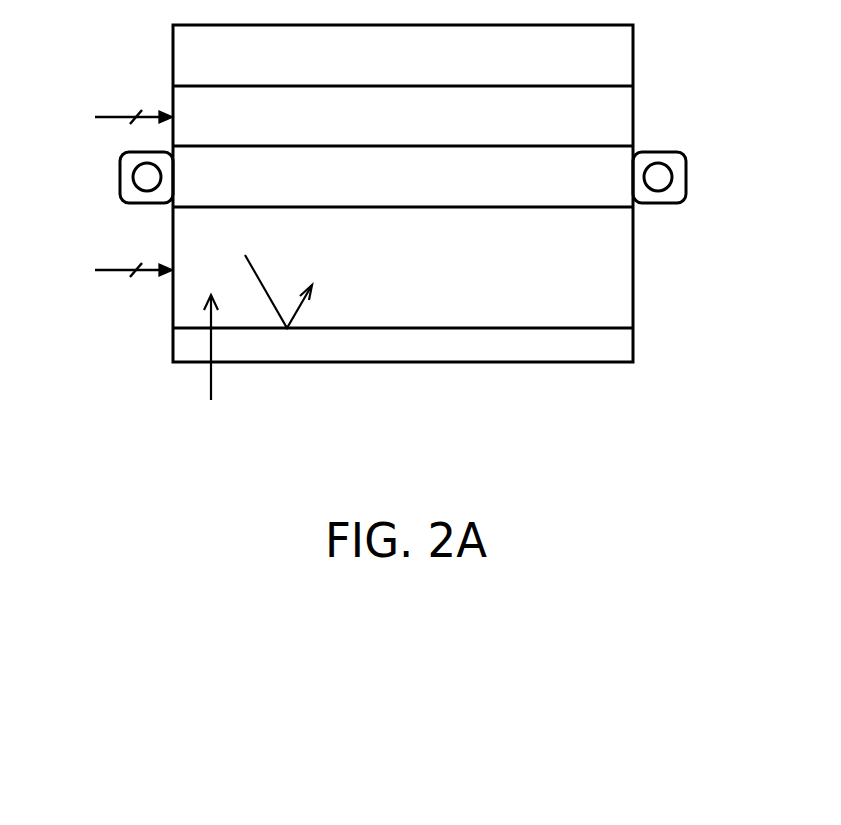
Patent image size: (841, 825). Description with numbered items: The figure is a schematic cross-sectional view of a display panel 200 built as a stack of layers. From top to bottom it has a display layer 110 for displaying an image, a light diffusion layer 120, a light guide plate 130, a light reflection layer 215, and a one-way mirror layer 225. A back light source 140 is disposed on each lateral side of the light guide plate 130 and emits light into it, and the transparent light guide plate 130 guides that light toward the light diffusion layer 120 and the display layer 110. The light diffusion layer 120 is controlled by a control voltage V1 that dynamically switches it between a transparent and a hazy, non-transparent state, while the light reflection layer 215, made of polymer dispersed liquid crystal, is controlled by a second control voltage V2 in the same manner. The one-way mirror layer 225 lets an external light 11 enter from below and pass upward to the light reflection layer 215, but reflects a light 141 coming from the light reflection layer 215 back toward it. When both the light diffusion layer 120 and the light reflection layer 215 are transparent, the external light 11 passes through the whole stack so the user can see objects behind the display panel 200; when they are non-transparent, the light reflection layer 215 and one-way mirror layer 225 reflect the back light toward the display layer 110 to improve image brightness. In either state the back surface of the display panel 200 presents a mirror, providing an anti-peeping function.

The display layer 110 is at (605, 55).
The light diffusion layer 120 is at (605, 119).
The light guide plate 130 is at (212, 195).
The back light source 140 is at (147, 177).
The light reflection layer 215 is at (605, 272).
The one-way mirror layer 225 is at (605, 348).
The display panel 200 is at (403, 233).
The external light 11 is at (210, 378).
The light from the light reflection layer 141 is at (262, 293).
The control voltage V1 is at (115, 117).
The second control voltage V2 is at (115, 272).